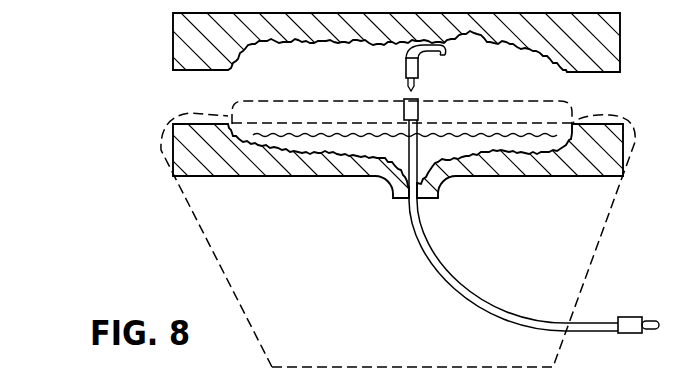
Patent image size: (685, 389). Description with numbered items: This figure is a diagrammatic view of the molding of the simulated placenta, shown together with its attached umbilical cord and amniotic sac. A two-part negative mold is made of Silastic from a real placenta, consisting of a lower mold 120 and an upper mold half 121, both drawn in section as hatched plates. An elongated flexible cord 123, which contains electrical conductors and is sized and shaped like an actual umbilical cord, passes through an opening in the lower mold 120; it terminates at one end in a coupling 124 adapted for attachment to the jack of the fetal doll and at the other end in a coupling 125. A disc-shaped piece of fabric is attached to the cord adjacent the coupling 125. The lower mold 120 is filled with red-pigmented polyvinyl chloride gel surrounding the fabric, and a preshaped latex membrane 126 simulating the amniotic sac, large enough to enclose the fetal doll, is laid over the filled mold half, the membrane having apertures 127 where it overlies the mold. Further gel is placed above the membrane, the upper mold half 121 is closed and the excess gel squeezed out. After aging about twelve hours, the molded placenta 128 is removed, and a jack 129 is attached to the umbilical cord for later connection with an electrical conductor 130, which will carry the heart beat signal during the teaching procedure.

The lower mold 120 is at (609, 133).
The upper mold half 121 is at (610, 42).
The elongated flexible cord 123 is at (457, 277).
The coupling 124 is at (633, 317).
The coupling 125 is at (419, 99).
The latex membrane 126 is at (364, 137).
The apertures 127 is at (380, 115).
The molded placenta 128 is at (283, 101).
The jack 129 is at (405, 66).
The electrical conductor 130 is at (447, 51).